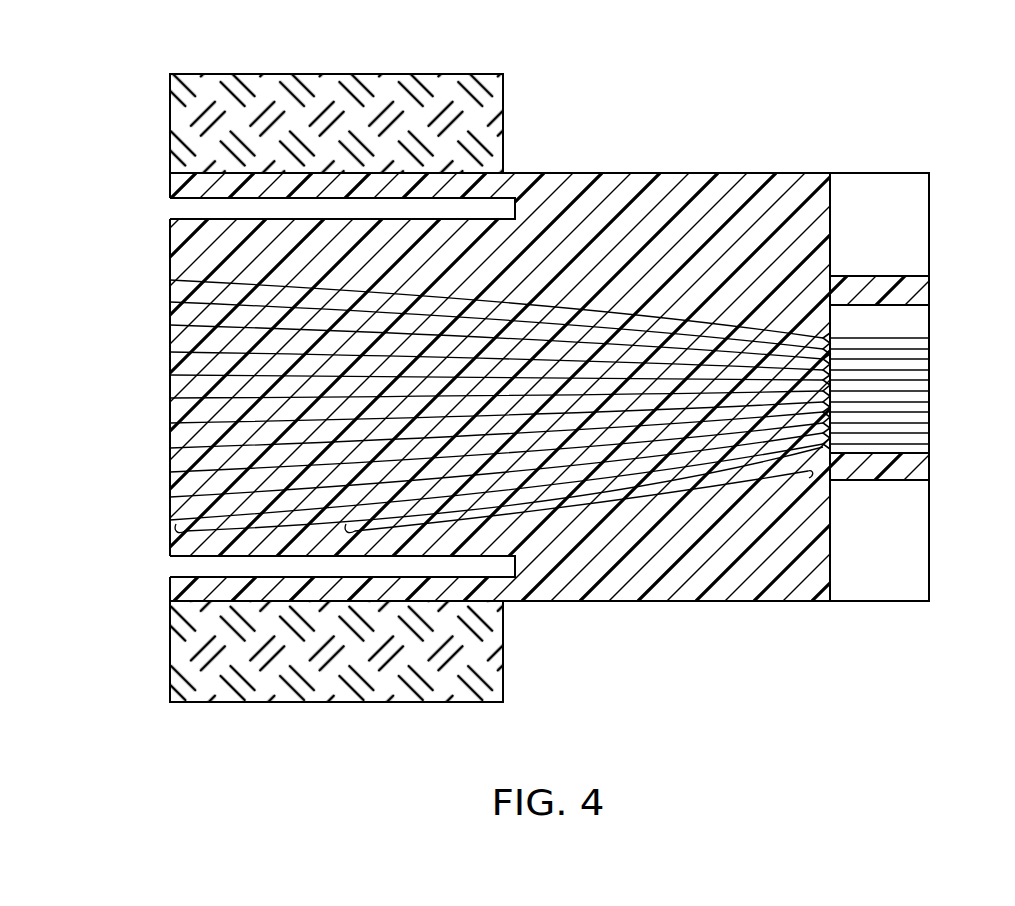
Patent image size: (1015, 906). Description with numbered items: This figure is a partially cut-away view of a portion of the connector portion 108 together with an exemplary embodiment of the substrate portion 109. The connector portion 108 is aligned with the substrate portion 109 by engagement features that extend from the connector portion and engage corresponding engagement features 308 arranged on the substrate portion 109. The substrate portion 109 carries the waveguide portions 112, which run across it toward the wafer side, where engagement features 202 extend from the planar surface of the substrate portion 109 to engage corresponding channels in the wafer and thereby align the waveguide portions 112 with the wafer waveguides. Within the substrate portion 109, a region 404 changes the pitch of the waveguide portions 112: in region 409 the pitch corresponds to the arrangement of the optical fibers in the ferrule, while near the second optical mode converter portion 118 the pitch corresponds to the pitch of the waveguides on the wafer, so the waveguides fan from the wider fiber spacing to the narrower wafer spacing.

The connector portion 108 is at (338, 86).
The substrate portion 109 is at (664, 188).
The waveguide portion 112 is at (637, 294).
The second optical mode converter portion 118 is at (878, 462).
The engagement features 202 is at (921, 294).
The engagement features 308 is at (190, 212).
The region 404 is at (610, 498).
The region 409 is at (238, 537).